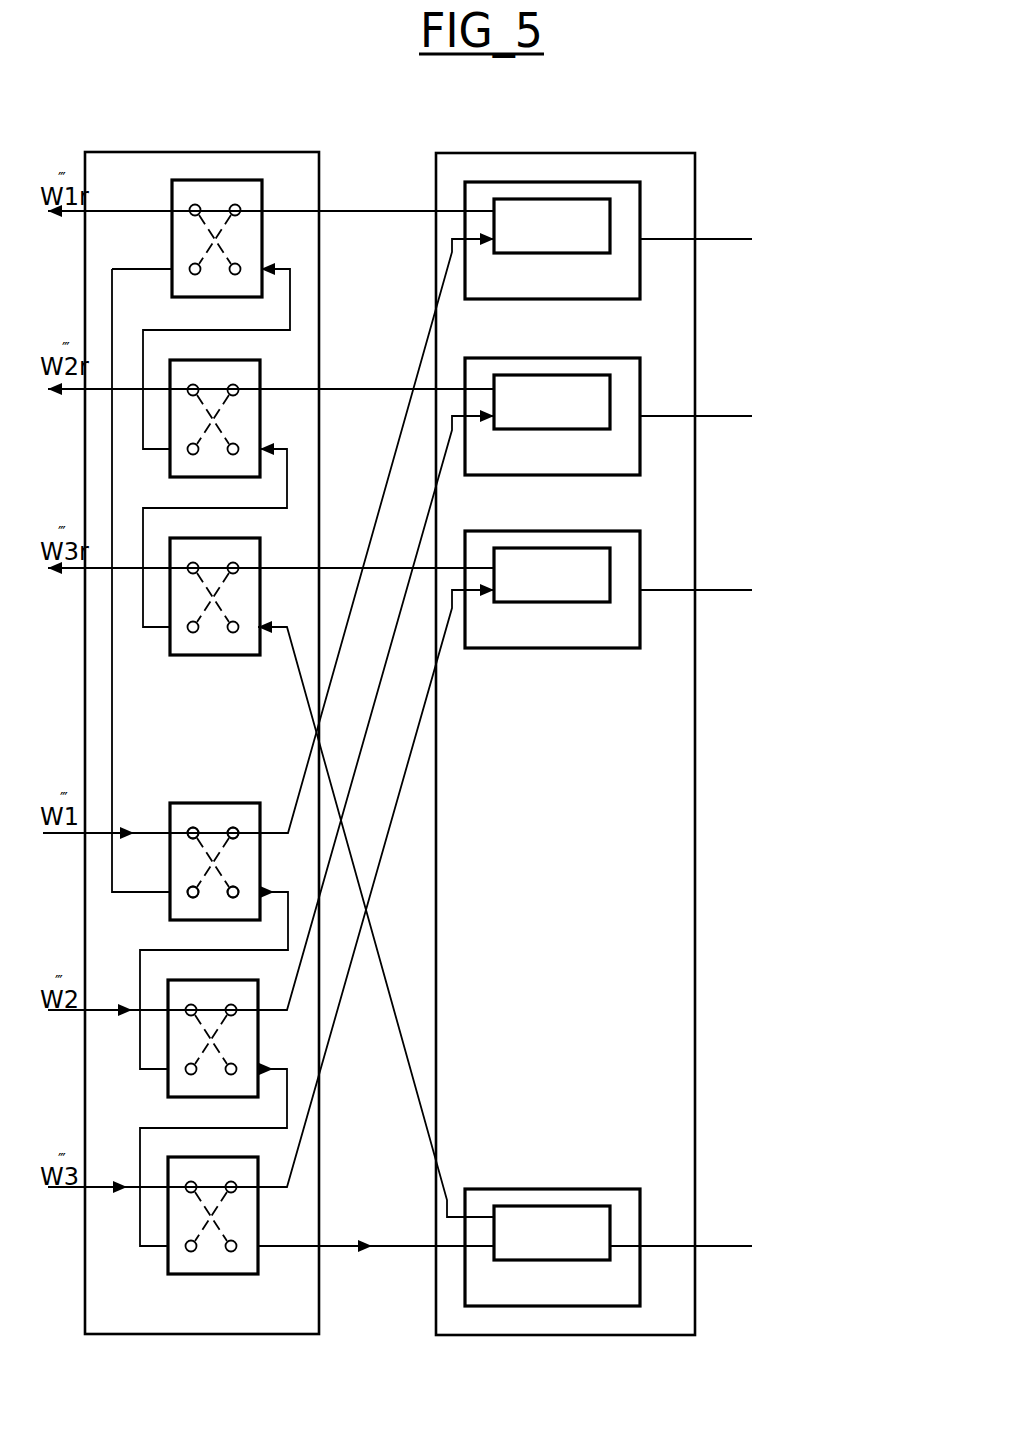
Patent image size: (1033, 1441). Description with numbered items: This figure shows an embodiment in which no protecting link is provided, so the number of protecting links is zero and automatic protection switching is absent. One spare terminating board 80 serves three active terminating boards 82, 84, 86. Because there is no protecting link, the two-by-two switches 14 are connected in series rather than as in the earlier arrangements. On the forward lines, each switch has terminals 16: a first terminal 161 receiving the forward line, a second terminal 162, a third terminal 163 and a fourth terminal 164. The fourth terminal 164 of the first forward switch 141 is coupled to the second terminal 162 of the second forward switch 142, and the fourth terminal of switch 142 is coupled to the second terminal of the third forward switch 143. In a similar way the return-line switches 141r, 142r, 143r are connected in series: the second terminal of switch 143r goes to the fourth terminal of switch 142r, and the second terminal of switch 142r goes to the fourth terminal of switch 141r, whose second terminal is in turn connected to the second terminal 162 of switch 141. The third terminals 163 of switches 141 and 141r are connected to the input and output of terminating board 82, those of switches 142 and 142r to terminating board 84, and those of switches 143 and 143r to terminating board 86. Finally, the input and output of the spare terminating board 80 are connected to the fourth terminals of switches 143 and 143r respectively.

The 2×2 switch 14 is at (250, 669).
The first return-line switch 141r is at (222, 186).
The second return-line switch 142r is at (240, 360).
The third return-line switch 143r is at (240, 540).
The first forward-line switch 141 is at (222, 803).
The second forward-line switch 142 is at (259, 1025).
The third forward-line switch 143 is at (259, 1205).
The switch terminal 16 is at (211, 817).
The first terminal 161 is at (191, 826).
The second terminal 162 is at (190, 886).
The third terminal 163 is at (236, 826).
The fourth terminal 164 is at (236, 886).
The spare terminating board 80 is at (602, 1189).
The active terminating board 82 is at (558, 300).
The active terminating board 84 is at (553, 475).
The active terminating board 86 is at (553, 648).